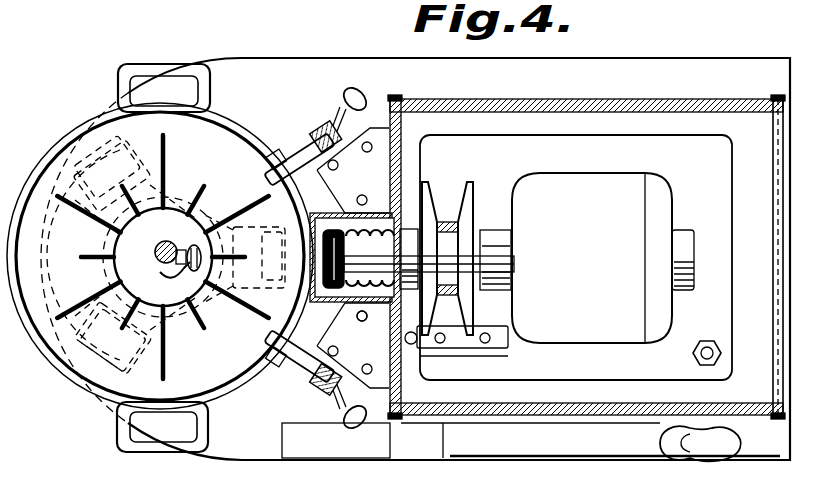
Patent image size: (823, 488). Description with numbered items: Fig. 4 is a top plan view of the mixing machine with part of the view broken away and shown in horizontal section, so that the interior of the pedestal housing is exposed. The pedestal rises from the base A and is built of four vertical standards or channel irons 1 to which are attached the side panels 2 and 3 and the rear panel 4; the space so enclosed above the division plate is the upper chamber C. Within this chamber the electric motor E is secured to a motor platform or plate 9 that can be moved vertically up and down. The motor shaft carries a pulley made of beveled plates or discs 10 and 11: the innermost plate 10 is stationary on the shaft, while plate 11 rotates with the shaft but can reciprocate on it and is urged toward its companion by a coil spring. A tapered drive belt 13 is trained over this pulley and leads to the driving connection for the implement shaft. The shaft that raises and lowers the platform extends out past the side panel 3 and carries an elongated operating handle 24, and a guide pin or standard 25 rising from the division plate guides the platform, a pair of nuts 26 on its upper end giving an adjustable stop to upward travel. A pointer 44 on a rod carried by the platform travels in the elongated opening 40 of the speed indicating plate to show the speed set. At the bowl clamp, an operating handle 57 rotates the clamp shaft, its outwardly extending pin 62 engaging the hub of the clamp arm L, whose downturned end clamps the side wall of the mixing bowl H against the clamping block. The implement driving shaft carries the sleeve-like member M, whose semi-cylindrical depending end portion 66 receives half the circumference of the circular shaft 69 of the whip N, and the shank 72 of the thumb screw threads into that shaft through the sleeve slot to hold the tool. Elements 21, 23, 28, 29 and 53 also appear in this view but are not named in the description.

The vertical standards or channel irons 1 is at (396, 99).
The side panel 2 is at (552, 104).
The side panel 3 is at (577, 415).
The rear panel 4 is at (776, 222).
The motor platform or plate 9 is at (576, 257).
The pulley plate 10 is at (474, 203).
The pulley plate 11 is at (426, 180).
The drive belt 13 is at (447, 220).
The bearing bracket 21 is at (430, 352).
The spoke 23 is at (162, 257).
The operating handle 24 is at (389, 440).
The guide pin or standard 25 is at (692, 353).
The nuts 26 is at (714, 332).
The foot 28 is at (414, 450).
The clip 29 is at (705, 462).
The elongated opening 40 is at (387, 352).
The pointer 44 is at (385, 343).
The lever 53 is at (283, 378).
The operating handle 57 is at (348, 93).
The pin 62 is at (328, 112).
The depending end portion 66 is at (172, 272).
The circular shaft 69 is at (156, 250).
The shank 72 is at (352, 257).
The base A is at (177, 258).
The upper chamber C is at (695, 128).
The electric motor E is at (603, 258).
The mixing bowl H is at (65, 373).
The clamp arm L is at (268, 165).
The sleeve-like member M is at (173, 242).
The whip N is at (122, 270).